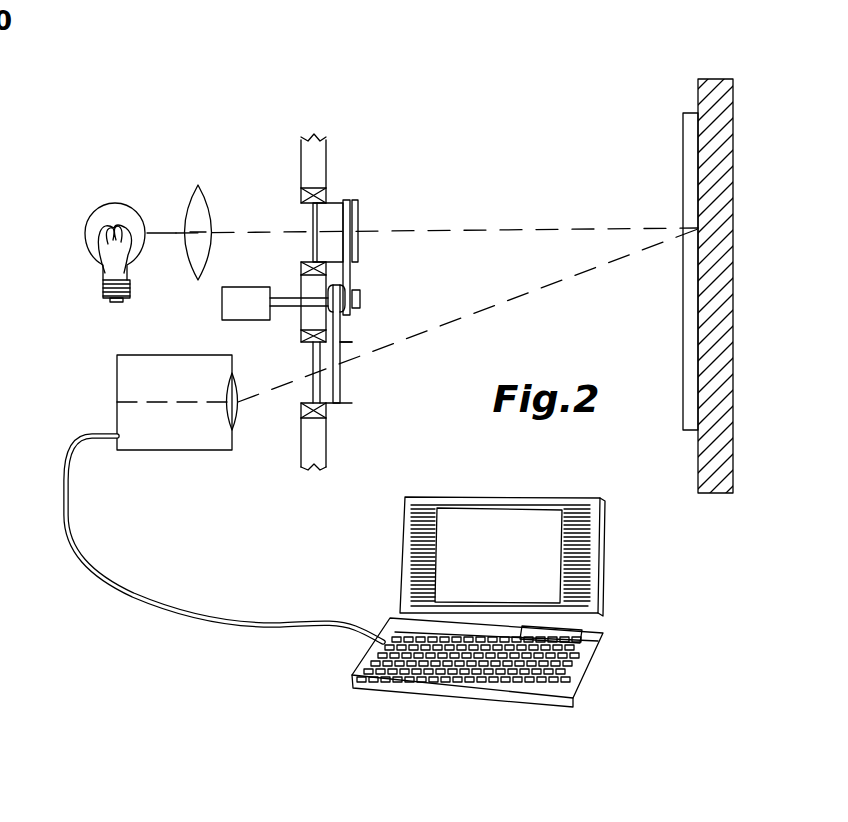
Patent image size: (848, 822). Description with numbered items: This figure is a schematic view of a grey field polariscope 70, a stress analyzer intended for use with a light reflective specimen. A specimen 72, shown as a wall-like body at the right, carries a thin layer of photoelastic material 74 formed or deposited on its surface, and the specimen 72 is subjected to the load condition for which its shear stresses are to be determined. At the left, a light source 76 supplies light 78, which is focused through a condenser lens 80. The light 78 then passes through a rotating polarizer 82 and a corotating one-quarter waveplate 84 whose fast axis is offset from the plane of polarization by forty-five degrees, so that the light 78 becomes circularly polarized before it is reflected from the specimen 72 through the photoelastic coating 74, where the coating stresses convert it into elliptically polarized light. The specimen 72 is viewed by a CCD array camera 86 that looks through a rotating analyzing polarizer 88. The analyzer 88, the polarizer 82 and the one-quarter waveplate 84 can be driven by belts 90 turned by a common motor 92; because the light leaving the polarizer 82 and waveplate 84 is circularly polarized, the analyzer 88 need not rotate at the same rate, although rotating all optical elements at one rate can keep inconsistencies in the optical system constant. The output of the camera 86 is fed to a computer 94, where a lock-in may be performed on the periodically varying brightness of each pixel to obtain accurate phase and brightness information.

The grey field polariscope 70 is at (460, 171).
The specimen 72 is at (717, 79).
The photoelastic material 74 is at (683, 372).
The light source 76 is at (90, 223).
The light 78 is at (167, 232).
The condenser lens 80 is at (188, 263).
The rotating polarizer 82 is at (313, 222).
The one-quarter waveplate 84 is at (352, 222).
The CCD array camera 86 is at (117, 370).
The rotating analyzing polarizer 88 is at (318, 385).
The belts 90 is at (350, 275).
The motor 92 is at (237, 287).
The computer 94 is at (604, 567).